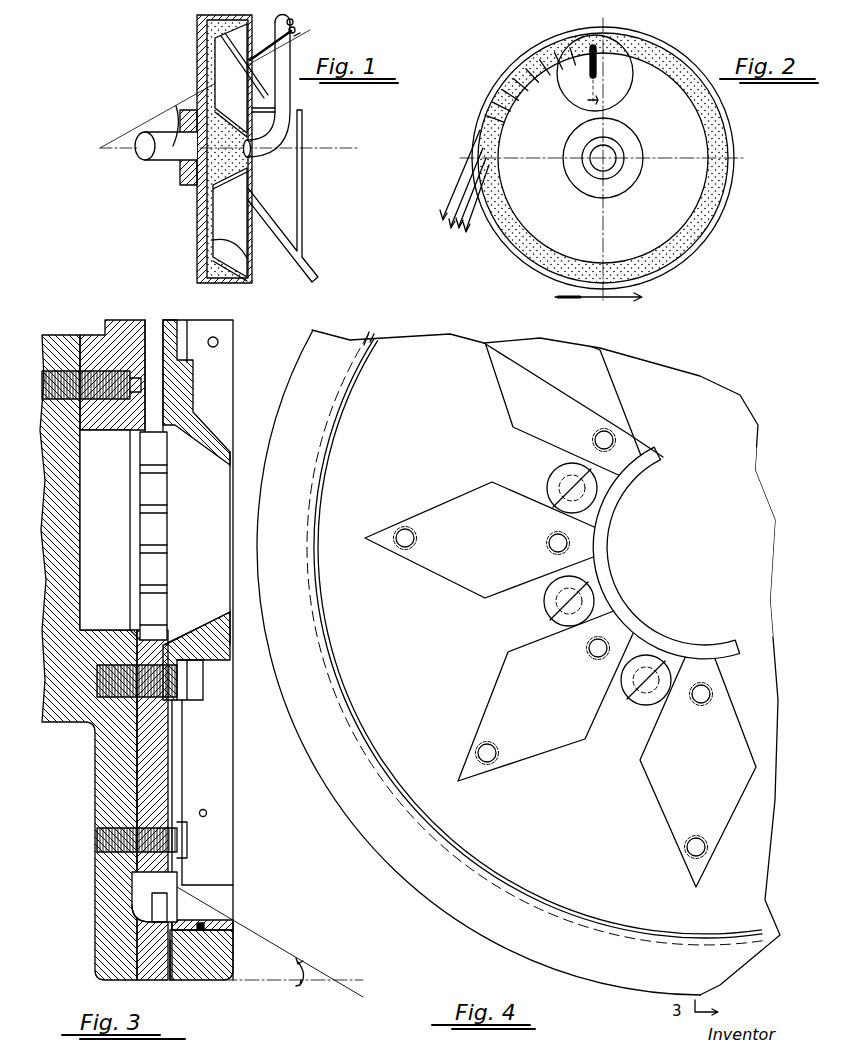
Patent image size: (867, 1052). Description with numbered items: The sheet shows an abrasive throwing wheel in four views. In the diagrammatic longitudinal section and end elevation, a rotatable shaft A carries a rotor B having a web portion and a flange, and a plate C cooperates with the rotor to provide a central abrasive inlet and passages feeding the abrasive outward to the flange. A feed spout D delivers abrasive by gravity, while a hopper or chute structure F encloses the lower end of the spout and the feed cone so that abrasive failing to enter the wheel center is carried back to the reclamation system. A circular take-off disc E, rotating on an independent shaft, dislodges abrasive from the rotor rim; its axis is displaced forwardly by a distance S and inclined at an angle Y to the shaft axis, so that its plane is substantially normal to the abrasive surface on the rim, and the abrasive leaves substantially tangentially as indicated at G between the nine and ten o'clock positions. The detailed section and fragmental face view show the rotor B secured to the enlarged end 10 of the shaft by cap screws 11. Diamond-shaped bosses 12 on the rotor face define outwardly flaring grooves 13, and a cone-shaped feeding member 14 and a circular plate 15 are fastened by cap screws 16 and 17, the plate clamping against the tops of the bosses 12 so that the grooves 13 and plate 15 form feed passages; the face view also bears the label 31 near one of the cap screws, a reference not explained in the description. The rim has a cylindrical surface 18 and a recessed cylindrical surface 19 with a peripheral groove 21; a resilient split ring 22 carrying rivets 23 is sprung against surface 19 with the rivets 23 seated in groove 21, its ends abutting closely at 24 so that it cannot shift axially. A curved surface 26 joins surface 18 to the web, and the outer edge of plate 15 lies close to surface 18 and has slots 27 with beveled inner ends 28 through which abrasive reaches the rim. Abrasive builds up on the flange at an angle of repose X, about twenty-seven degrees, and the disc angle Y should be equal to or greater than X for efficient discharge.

In FIG. 3, the enlarged end of shaft 10 is at (77, 562).
In FIG. 3, the cap screws 11 is at (101, 386).
In FIG. 4, the cap screws 11 is at (555, 618).
In FIG. 3, the diamond-shaped bosses 12 is at (162, 526).
In FIG. 4, the diamond-shaped bosses 12 is at (500, 718).
In FIG. 3, the grooves 13 is at (150, 330).
In FIG. 4, the grooves 13 is at (510, 600).
In FIG. 3, the cone-shaped feeding member 14 is at (218, 626).
In FIG. 3, the circular plate 15 is at (178, 766).
In FIG. 3, the cap screws 16 is at (183, 841).
In FIG. 3, the cap screws 17 is at (201, 677).
In FIG. 3, the cylindrical surface 18 is at (170, 942).
In FIG. 3, the recessed cylindrical surface 19 is at (226, 946).
In FIG. 4, the recessed cylindrical surface 19 is at (343, 692).
In FIG. 3, the peripheral groove 21 is at (208, 932).
In FIG. 4, the peripheral groove 21 is at (386, 787).
In FIG. 3, the resilient ring 22 is at (215, 927).
In FIG. 4, the resilient ring 22 is at (323, 625).
In FIG. 3, the rivets 23 is at (218, 346).
In FIG. 4, the rivets 23 is at (680, 968).
In FIG. 3, the abutting ends of ring 24 is at (200, 885).
In FIG. 3, the curved surface 26 is at (130, 966).
In FIG. 3, the slots 27 is at (160, 936).
In FIG. 3, the beveled inner ends 28 is at (150, 906).
In FIG. 4, the hub 31 is at (556, 474).
In FIG. 1, the rotatable shaft A is at (166, 162).
In FIG. 2, the rotatable shaft A is at (603, 158).
In FIG. 1, the rotor B is at (205, 238).
In FIG. 3, the rotor B is at (95, 796).
In FIG. 1, the plate C is at (244, 256).
In FIG. 2, the plate C is at (662, 220).
In FIG. 1, the feed spout D is at (292, 98).
In FIG. 1, the take-off disc E is at (250, 56).
In FIG. 2, the take-off disc E is at (566, 96).
In FIG. 1, the hopper or chute structure F is at (303, 190).
In FIG. 2, the abrasive discharge G is at (456, 240).
In FIG. 2, the axis displacement distance S is at (601, 106).
In FIG. 3, the angle of repose X is at (270, 942).
In FIG. 1, the disc axis angle Y is at (174, 133).